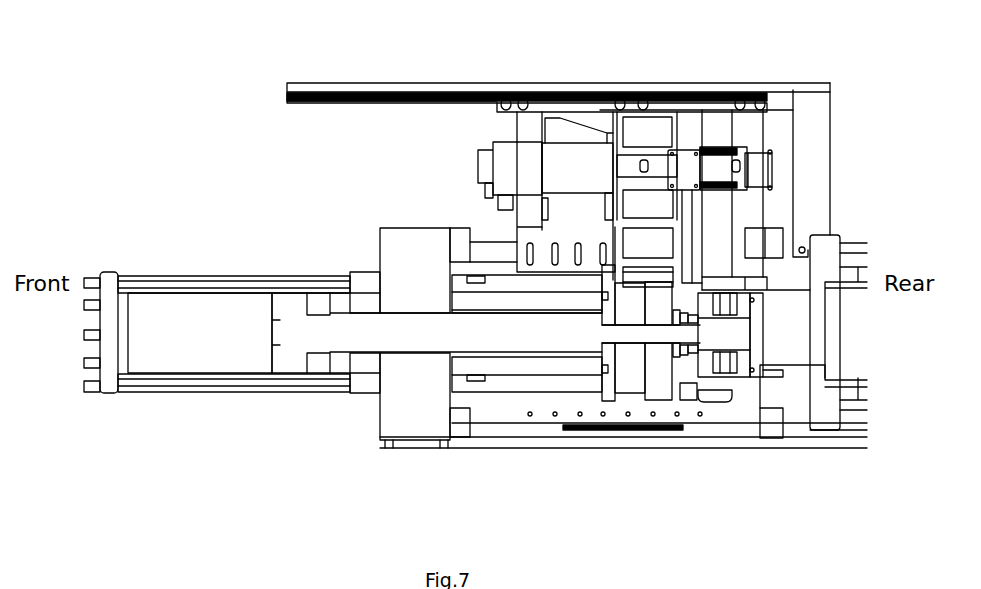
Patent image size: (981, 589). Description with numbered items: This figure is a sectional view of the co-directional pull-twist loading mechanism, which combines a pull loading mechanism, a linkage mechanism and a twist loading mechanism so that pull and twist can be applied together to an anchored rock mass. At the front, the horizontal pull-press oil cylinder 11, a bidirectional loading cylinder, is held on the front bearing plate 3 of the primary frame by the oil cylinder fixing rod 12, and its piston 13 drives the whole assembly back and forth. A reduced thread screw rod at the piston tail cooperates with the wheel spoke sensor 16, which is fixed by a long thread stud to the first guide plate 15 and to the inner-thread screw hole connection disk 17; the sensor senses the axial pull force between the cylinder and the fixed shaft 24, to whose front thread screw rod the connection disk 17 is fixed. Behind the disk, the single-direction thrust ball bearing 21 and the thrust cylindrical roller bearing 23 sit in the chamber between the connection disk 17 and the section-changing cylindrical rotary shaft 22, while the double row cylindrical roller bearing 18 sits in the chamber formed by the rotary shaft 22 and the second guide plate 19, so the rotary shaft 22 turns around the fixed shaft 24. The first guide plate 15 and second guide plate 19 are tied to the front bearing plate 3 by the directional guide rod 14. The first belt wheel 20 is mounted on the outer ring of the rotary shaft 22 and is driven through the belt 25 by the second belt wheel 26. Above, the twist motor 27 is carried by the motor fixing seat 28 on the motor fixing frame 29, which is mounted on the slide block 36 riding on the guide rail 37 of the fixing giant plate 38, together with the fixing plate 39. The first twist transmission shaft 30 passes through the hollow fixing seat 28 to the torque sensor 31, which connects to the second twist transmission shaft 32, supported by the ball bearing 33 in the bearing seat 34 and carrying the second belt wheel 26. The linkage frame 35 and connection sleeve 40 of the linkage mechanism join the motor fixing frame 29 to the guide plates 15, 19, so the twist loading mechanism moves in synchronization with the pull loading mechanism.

The front bearing plate 3 is at (390, 395).
The horizontal pull-press oil cylinder 11 is at (160, 306).
The oil cylinder fixing rod 12 is at (180, 273).
The piston 13 is at (323, 337).
The directional guide rod 14 is at (518, 283).
The first guide plate 15 is at (608, 390).
The wheel spoke sensor 16 is at (633, 368).
The inner-thread screw hole connection disk 17 is at (662, 368).
The double row cylindrical roller bearing 18 is at (683, 372).
The second guide plate 19 is at (692, 356).
The first belt wheel 20 is at (700, 353).
The single-direction thrust ball bearing 21 is at (705, 353).
The cylindrical rotary shaft 22 is at (702, 393).
The thrust cylindrical roller bearing 23 is at (727, 367).
The fixed shaft 24 is at (733, 337).
The belt 25 is at (722, 232).
The second belt wheel 26 is at (720, 167).
The twist motor 27 is at (497, 163).
The motor fixing seat 28 is at (568, 168).
The motor fixing frame 29 is at (618, 145).
The first twist transmission shaft 30 is at (677, 167).
The torque sensor 31 is at (715, 145).
The second twist transmission shaft 32 is at (755, 140).
The ball bearing 33 is at (766, 163).
The bearing seat 34 is at (760, 168).
The linkage frame 35 is at (643, 167).
The slide block 36 is at (513, 97).
The guide rail 37 is at (538, 128).
The fixing giant plate 38 is at (453, 90).
The fixing plate 39 is at (528, 228).
The connection sleeve 40 is at (793, 332).